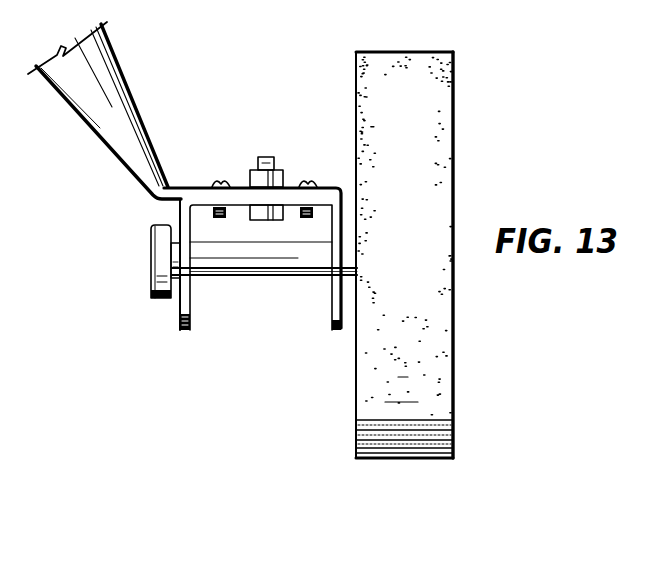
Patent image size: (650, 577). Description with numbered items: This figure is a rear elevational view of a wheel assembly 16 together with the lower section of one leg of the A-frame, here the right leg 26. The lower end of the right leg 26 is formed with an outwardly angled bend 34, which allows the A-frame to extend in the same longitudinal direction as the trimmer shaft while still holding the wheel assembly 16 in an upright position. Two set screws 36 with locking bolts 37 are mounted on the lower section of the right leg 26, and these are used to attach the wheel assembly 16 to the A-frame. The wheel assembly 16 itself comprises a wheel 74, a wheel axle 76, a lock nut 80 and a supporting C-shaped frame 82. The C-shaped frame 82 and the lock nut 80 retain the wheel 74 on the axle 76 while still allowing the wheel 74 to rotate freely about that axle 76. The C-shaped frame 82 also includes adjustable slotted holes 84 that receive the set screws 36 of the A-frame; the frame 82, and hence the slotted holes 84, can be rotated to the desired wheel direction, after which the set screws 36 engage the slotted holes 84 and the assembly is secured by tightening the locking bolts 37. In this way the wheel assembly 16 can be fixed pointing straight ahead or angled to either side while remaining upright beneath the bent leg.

The wheel assembly 16 is at (261, 315).
The right leg 26 is at (114, 104).
The outwardly angled bend 34 is at (170, 185).
The set screw 36 is at (214, 180).
The locking bolt 37 is at (264, 157).
The wheel 74 is at (447, 393).
The wheel axle 76 is at (275, 270).
The lock nut 80 is at (153, 268).
The C-shaped frame 82 is at (178, 313).
The slotted holes 84 is at (300, 216).